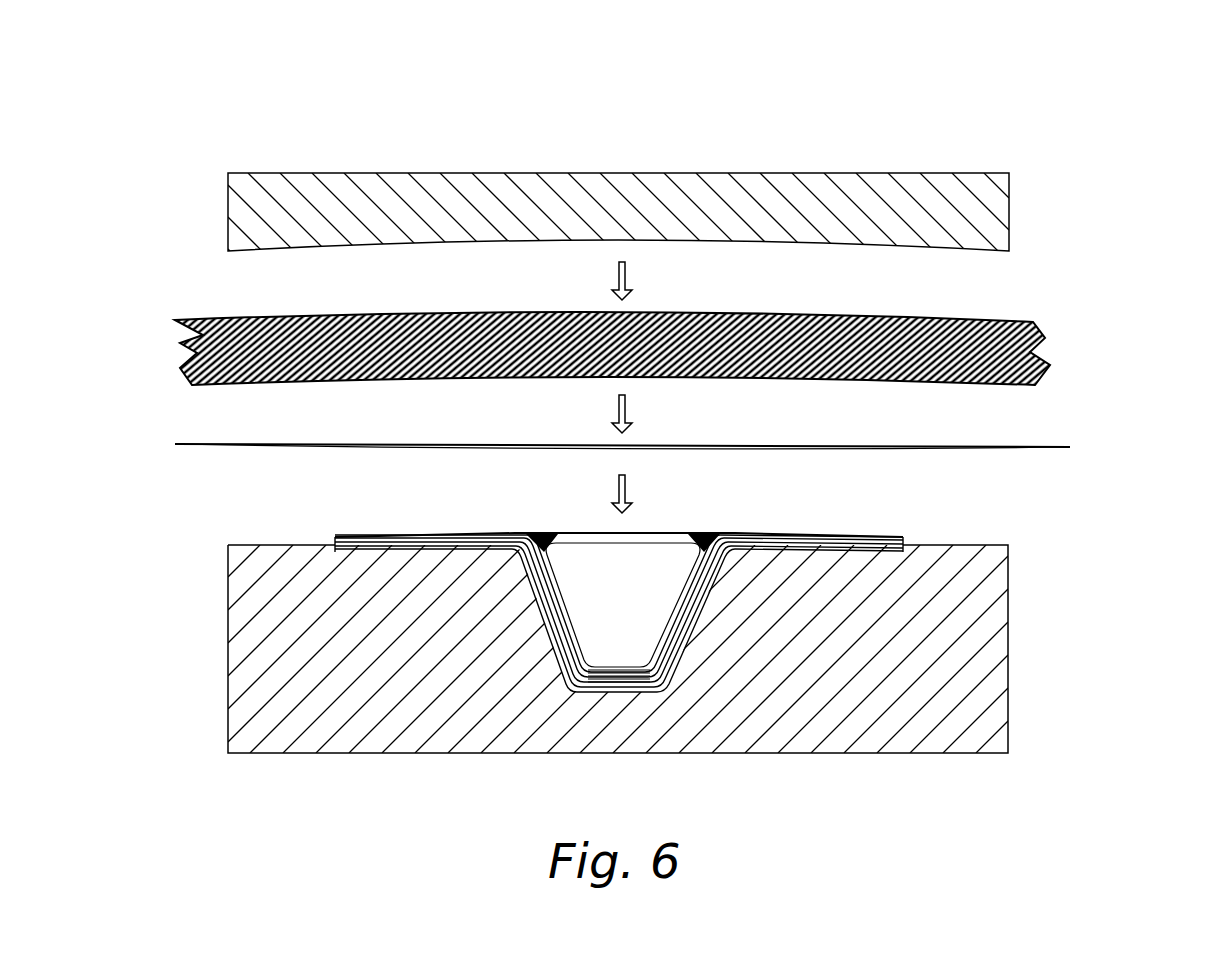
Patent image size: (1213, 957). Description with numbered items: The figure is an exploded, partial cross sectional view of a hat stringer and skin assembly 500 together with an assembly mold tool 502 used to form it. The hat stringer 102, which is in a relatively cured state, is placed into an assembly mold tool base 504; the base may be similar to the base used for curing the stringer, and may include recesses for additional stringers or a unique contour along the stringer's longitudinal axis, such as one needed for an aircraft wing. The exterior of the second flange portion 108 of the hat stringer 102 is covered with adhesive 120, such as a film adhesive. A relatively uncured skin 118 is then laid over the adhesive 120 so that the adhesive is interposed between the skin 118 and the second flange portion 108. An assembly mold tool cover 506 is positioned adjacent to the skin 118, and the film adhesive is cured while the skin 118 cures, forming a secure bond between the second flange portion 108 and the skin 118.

The assembly 500 is at (116, 89).
The assembly mold tool 502 is at (1040, 251).
The assembly mold tool base 504 is at (267, 753).
The assembly mold tool cover 506 is at (260, 173).
The skin 118 is at (218, 318).
The adhesive 120 is at (220, 443).
The hat stringer 102 is at (522, 530).
The second flange portion 108 is at (803, 533).